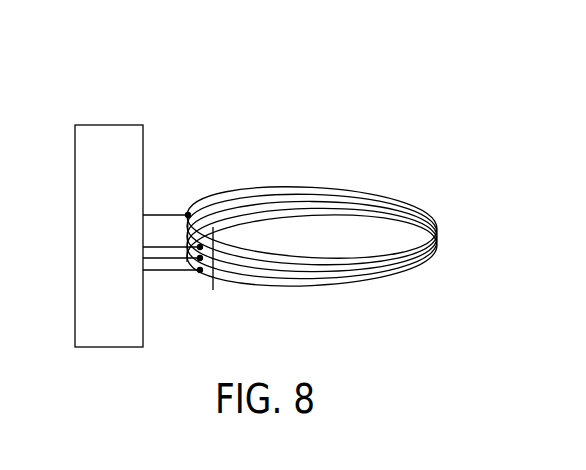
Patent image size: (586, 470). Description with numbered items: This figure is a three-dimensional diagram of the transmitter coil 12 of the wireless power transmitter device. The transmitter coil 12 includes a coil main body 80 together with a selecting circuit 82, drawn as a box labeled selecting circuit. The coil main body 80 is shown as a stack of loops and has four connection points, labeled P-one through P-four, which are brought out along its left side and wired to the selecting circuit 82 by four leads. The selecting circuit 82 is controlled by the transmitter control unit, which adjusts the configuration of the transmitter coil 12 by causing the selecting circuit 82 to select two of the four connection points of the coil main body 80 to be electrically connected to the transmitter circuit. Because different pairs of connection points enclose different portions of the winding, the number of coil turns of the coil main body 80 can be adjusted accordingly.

The transmitter coil 12 is at (396, 34).
The coil main body 80 is at (399, 196).
The selecting circuit 82 is at (127, 124).